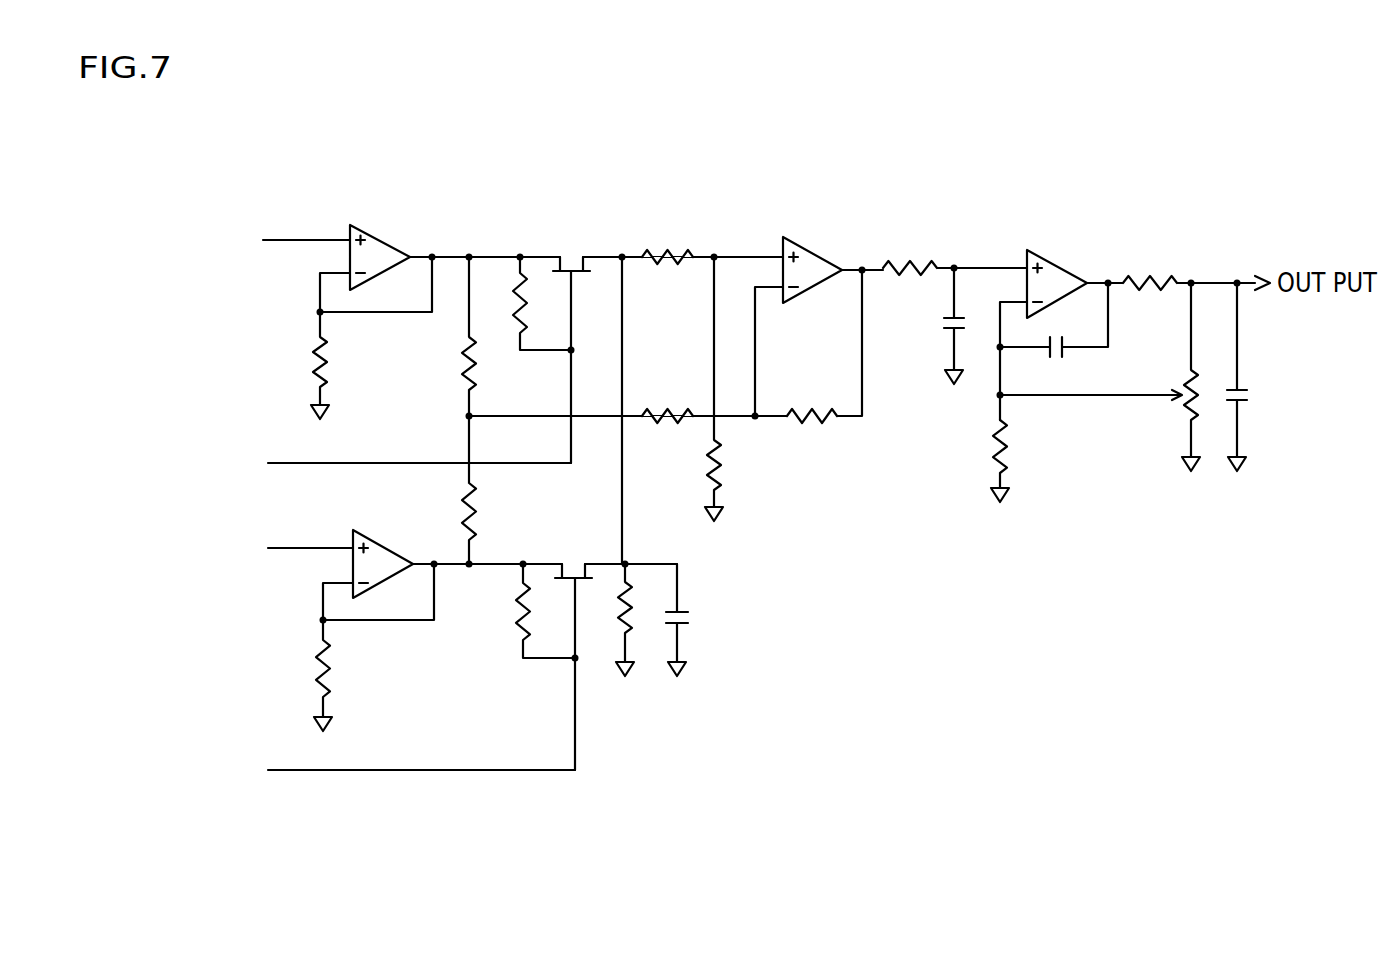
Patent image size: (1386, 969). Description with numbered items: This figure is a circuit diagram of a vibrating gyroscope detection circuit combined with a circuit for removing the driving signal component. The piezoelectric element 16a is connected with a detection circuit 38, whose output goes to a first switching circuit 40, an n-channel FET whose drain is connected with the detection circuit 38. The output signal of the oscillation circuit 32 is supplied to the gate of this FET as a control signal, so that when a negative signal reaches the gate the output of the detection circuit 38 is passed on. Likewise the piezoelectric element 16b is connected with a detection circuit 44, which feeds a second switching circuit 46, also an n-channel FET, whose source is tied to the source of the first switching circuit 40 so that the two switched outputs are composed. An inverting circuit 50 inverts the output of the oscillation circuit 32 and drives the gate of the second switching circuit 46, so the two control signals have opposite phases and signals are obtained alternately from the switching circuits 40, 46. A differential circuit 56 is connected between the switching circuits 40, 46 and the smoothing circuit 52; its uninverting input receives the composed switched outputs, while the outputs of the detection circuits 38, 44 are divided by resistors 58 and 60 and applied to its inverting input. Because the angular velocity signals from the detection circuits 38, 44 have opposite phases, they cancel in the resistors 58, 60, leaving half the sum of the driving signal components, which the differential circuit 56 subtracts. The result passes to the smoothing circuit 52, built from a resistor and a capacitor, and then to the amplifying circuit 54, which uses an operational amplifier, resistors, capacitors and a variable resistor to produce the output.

The piezoelectric element 16a is at (206, 244).
The piezoelectric element 16b is at (211, 552).
The oscillation circuit 32 is at (319, 462).
The inverting circuit 50 is at (326, 771).
The detection circuit 38 is at (398, 225).
The first switching circuit 40 is at (567, 230).
The detection circuit 44 is at (393, 533).
The second switching circuit 46 is at (572, 550).
The smoothing circuit 52 is at (957, 233).
The amplifying circuit 54 is at (1082, 247).
The differential circuit 56 is at (803, 230).
The resistor 58 is at (483, 365).
The resistor 60 is at (483, 512).